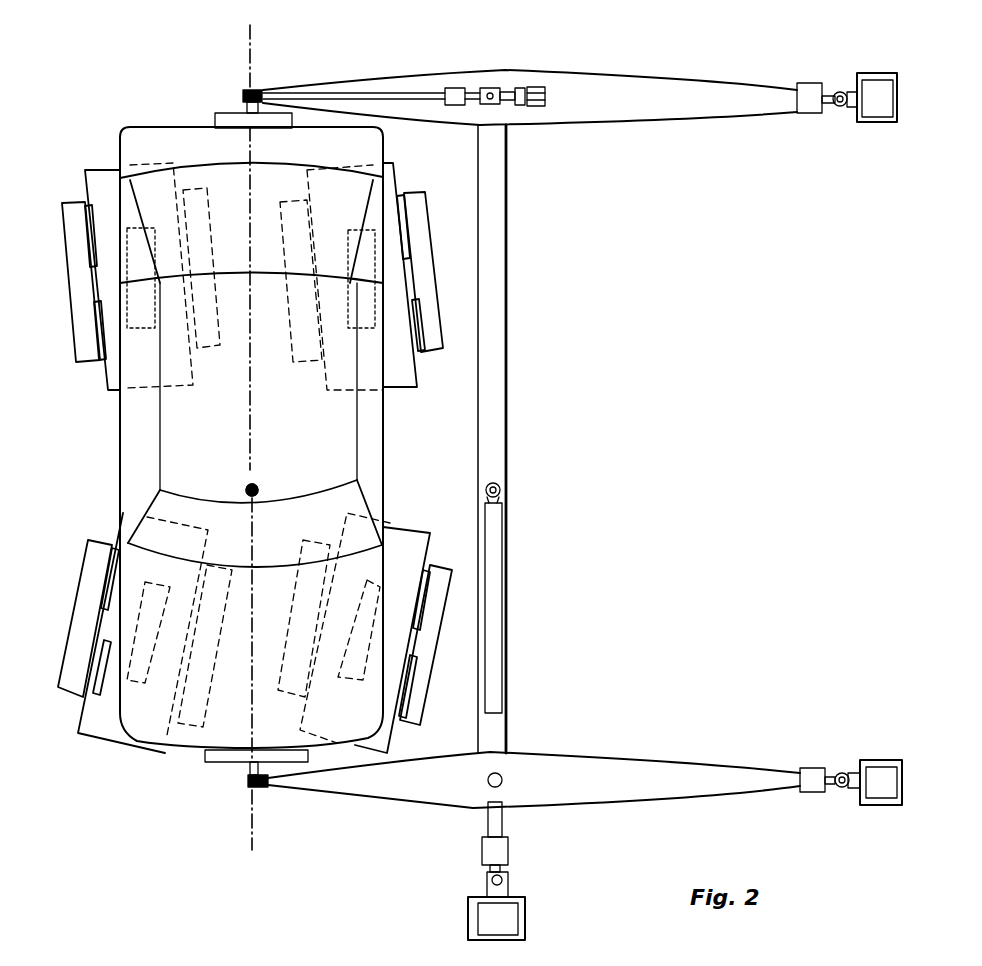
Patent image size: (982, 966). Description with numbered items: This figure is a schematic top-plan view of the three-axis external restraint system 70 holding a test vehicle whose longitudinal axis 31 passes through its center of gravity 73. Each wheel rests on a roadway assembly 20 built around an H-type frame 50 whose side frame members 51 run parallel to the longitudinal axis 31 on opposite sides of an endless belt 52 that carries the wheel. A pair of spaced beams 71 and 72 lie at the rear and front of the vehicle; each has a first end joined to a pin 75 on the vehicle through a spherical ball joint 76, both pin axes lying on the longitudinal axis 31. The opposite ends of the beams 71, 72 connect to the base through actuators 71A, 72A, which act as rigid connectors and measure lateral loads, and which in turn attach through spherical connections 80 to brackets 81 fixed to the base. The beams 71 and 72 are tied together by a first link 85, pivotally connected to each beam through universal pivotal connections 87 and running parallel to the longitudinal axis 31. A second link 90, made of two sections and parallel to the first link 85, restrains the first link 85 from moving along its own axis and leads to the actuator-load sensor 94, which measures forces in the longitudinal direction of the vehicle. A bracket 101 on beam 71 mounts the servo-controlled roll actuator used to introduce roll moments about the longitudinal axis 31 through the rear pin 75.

The roadway assembly 20 is at (412, 178).
The longitudinal axis 31 is at (250, 398).
The H-type frame 50 is at (56, 205).
The side frame member 51 is at (70, 272).
The endless belt 52 is at (426, 525).
The external restraint system 70 is at (468, 822).
The beam 71 is at (618, 90).
The actuator 71A is at (810, 88).
The beam 72 is at (678, 785).
The actuator 72A is at (812, 795).
The center of gravity 73 is at (258, 488).
The pin 75 is at (244, 105).
The spherical ball joint 76 is at (250, 90).
The spherical connection 80 is at (843, 92).
The bracket 81 is at (865, 125).
The first link 85 is at (506, 372).
The universal pivotal connection 87 is at (492, 88).
The second link 90 is at (498, 672).
The actuator-load sensor 94 is at (510, 848).
The bracket 101 is at (537, 88).